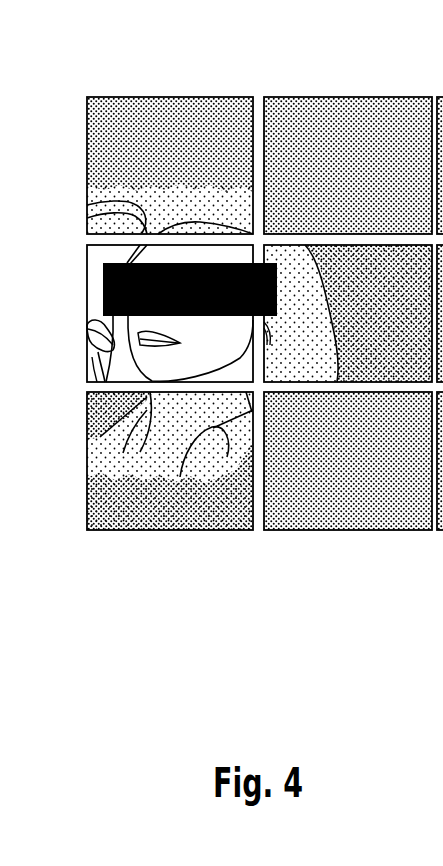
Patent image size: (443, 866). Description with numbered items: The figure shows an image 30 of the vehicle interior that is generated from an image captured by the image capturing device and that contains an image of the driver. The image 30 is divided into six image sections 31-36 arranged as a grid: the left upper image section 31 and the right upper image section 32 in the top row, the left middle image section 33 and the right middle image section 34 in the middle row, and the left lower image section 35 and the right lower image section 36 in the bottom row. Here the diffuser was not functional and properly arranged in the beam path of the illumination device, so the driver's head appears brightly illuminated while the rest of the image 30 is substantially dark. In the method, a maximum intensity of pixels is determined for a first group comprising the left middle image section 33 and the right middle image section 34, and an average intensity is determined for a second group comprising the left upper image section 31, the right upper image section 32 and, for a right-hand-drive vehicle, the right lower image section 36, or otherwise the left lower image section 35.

The image 30 is at (224, 334).
The left upper image section 31 is at (168, 97).
The right upper image section 32 is at (348, 97).
The left middle image section 33 is at (85, 316).
The right middle image section 34 is at (400, 383).
The left lower image section 35 is at (165, 530).
The right lower image section 36 is at (348, 513).